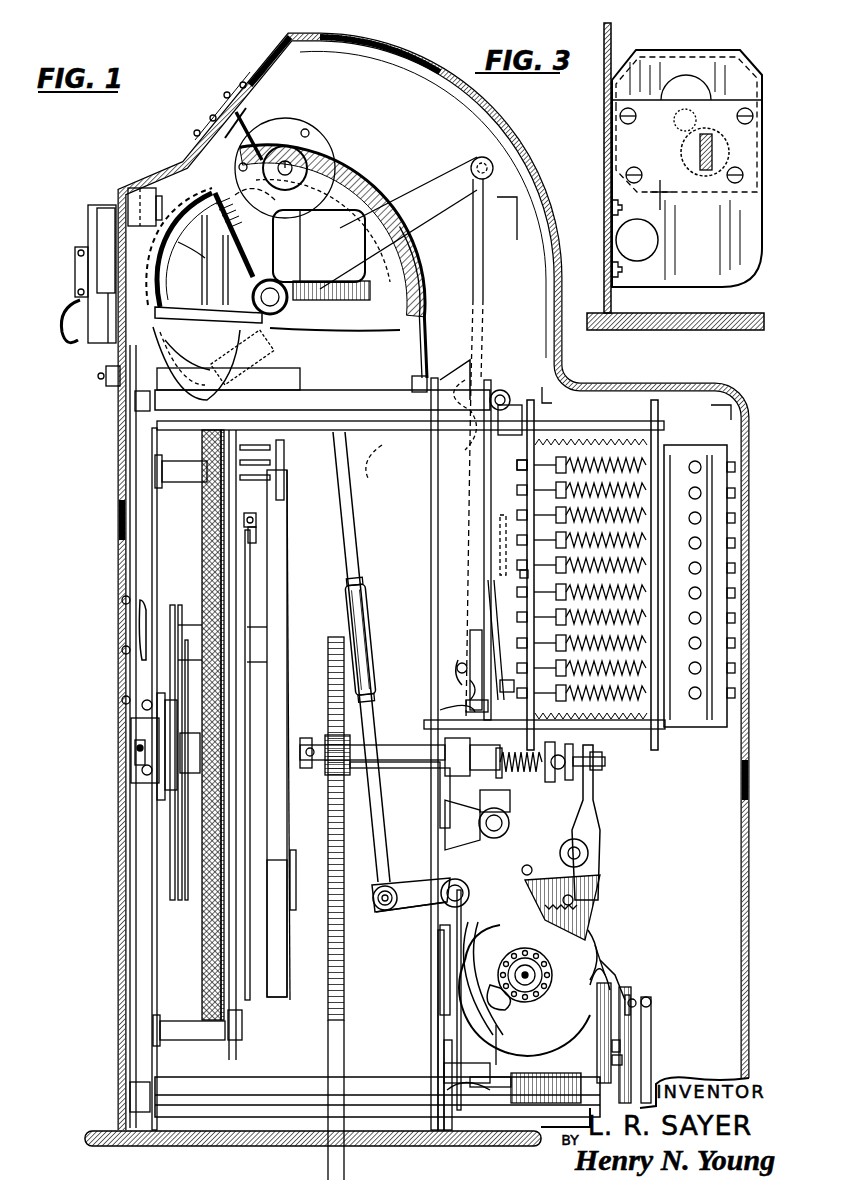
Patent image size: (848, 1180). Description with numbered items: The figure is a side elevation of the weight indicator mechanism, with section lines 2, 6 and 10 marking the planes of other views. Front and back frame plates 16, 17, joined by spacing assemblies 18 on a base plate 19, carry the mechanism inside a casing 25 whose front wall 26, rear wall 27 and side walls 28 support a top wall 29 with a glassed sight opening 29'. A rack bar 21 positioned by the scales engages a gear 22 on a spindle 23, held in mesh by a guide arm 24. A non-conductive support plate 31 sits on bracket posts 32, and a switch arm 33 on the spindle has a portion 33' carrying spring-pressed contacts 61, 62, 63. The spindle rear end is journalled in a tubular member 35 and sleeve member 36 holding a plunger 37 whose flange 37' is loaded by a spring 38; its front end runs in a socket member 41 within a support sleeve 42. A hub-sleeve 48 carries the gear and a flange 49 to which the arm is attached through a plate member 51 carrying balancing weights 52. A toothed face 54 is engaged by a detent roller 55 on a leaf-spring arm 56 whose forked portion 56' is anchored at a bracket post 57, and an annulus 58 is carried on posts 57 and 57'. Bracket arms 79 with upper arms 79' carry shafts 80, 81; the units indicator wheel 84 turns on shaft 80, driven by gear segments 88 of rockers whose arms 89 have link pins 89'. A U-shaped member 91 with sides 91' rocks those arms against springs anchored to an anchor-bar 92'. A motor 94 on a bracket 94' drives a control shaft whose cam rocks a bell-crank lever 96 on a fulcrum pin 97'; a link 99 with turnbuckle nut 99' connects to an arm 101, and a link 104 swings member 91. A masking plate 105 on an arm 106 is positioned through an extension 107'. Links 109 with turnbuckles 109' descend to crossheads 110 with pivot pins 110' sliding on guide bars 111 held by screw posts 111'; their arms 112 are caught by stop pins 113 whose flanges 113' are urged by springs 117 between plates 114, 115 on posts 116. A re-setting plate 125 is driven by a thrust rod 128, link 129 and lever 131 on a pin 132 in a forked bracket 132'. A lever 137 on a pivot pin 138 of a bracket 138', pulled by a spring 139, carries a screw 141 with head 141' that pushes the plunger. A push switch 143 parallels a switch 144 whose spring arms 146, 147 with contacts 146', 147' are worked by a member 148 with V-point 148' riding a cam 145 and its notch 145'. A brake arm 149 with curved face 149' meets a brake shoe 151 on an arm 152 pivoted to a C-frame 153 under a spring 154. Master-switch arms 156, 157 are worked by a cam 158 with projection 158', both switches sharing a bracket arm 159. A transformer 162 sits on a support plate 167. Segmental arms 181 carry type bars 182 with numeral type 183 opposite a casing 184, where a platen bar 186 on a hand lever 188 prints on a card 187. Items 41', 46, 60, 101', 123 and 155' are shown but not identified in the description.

In FIG. 1, the section line 2 is at (285, 108).
In FIG. 1, the section line 6 is at (288, 46).
In FIG. 1, the register machine 10 is at (75, 200).
In FIG. 1, the front frame plate 16 is at (156, 520).
In FIG. 1, the rear frame plate 17 is at (432, 578).
In FIG. 3, the rear frame plate 17 is at (605, 190).
In FIG. 1, the spacing assemblies 18 is at (273, 1080).
In FIG. 1, the base plate 19 is at (205, 1140).
In FIG. 3, the base plate 19 is at (684, 322).
In FIG. 1, the rack bar 21 is at (345, 1035).
In FIG. 1, the gear 22 is at (345, 790).
In FIG. 1, the spindle 23 is at (390, 762).
In FIG. 1, the guide arm 24 is at (398, 745).
In FIG. 1, the casing 25 is at (163, 148).
In FIG. 1, the front wall 26 is at (118, 523).
In FIG. 1, the rear wall 27 is at (742, 777).
In FIG. 1, the side walls 28 is at (394, 155).
In FIG. 1, the top wall 29 is at (380, 54).
In FIG. 1, the sight opening 29' is at (206, 106).
In FIG. 1, the support plate 31 is at (238, 1016).
In FIG. 1, the bracket posts 32 is at (186, 458).
In FIG. 1, the switch arm 33 is at (284, 735).
In FIG. 1, the arm portion 33' is at (301, 473).
In FIG. 1, the tubular member 35 is at (417, 798).
In FIG. 1, the sleeve member 36 is at (478, 750).
In FIG. 1, the plunger 37 is at (519, 772).
In FIG. 1, the flange 37' is at (560, 776).
In FIG. 1, the helical compression spring 38 is at (540, 755).
In FIG. 1, the socket member 41 is at (110, 756).
In FIG. 1, the contact point 41' is at (106, 745).
In FIG. 1, the support sleeve 42 is at (137, 762).
In FIG. 1, the bracket 46 is at (135, 725).
In FIG. 1, the hub-sleeve 48 is at (312, 766).
In FIG. 1, the annular flange 49 is at (303, 736).
In FIG. 1, the plate member 51 is at (295, 850).
In FIG. 1, the balancing weight elements 52 is at (326, 776).
In FIG. 1, the toothed annular rear face 54 is at (238, 990).
In FIG. 1, the detent roller 55 is at (248, 512).
In FIG. 1, the leaf-spring arm 56 is at (286, 765).
In FIG. 1, the forked terminal portion 56' is at (287, 532).
In FIG. 1, the bracket post 57 is at (182, 739).
In FIG. 1, the bracket post 57' is at (180, 787).
In FIG. 1, the annulus 58 is at (199, 745).
In FIG. 1, the plate 60 is at (143, 600).
In FIG. 1, the electrical contact 61 is at (284, 480).
In FIG. 1, the electrical contact 62 is at (284, 466).
In FIG. 1, the electrical contact 63 is at (284, 450).
In FIG. 1, the bracket arms 79 is at (348, 261).
In FIG. 1, the upper arms 79' is at (330, 224).
In FIG. 1, the support shaft 80 is at (300, 160).
In FIG. 1, the support shaft 81 is at (277, 282).
In FIG. 1, the indicator wheel 84 is at (285, 168).
In FIG. 1, the gear segments 88 is at (240, 174).
In FIG. 1, the arms 89 is at (437, 368).
In FIG. 1, the link pins 89' is at (511, 383).
In FIG. 1, the U-shaped member 91 is at (427, 310).
In FIG. 1, the sides 91' is at (430, 378).
In FIG. 1, the anchor-bar 92' is at (205, 358).
In FIG. 3, the electric motor 94 is at (687, 158).
In FIG. 3, the bracket 94' is at (659, 240).
In FIG. 1, the bell-crank lever 96 is at (411, 879).
In FIG. 1, the fulcrum pin 97' is at (402, 913).
In FIG. 1, the link member 99 is at (366, 657).
In FIG. 1, the turnbuckle nut 99' is at (376, 639).
In FIG. 1, the arm 101 is at (366, 467).
In FIG. 1, the lever end 101' is at (454, 690).
In FIG. 1, the link 104 is at (295, 382).
In FIG. 1, the masking plate 105 is at (248, 120).
In FIG. 1, the arm 106 is at (242, 154).
In FIG. 1, the extension 107' is at (418, 268).
In FIG. 1, the links 109 is at (462, 646).
In FIG. 1, the turnbuckle 109' is at (467, 580).
In FIG. 1, the crosshead 110 is at (452, 655).
In FIG. 1, the pivot pin 110' is at (455, 695).
In FIG. 1, the guide bar 111 is at (469, 550).
In FIG. 1, the screw posts 111' is at (456, 518).
In FIG. 1, the arm 112 is at (512, 670).
In FIG. 1, the stop pin members 113 is at (548, 573).
In FIG. 1, the flanges 113' is at (559, 433).
In FIG. 1, the plate member 114 is at (516, 411).
In FIG. 1, the plate member 115 is at (656, 412).
In FIG. 1, the bracket posts 116 is at (605, 432).
In FIG. 1, the helical compression springs 117 is at (628, 440).
In FIG. 1, the key board 123 is at (685, 703).
In FIG. 1, the re-setting plate 125 is at (530, 528).
In FIG. 1, the thrust rod 128 is at (525, 572).
In FIG. 1, the link 129 is at (506, 640).
In FIG. 1, the lever 131 is at (482, 804).
In FIG. 1, the pin 132 is at (512, 822).
In FIG. 1, the forked bracket 132' is at (431, 825).
In FIG. 1, the lever 137 is at (597, 828).
In FIG. 1, the pivot pin 138 is at (597, 853).
In FIG. 1, the bracket 138' is at (530, 857).
In FIG. 1, the tension spring 139 is at (582, 886).
In FIG. 1, the adjustable member 141 is at (614, 767).
In FIG. 1, the screw head 141' is at (586, 756).
In FIG. 1, the push switch 143 is at (108, 386).
In FIG. 1, the switch 144 is at (635, 1000).
In FIG. 1, the plate cam 145 is at (524, 991).
In FIG. 1, the notch 145' is at (611, 945).
In FIG. 1, the spring arm 146 is at (657, 1045).
In FIG. 1, the terminal contact 146' is at (667, 1010).
In FIG. 1, the spring arm 147 is at (661, 1033).
In FIG. 1, the terminal contact 147' is at (679, 1044).
In FIG. 1, the cam-contacting member 148 is at (640, 963).
In FIG. 1, the V-point 148' is at (676, 970).
In FIG. 1, the radial arm 149 is at (529, 1009).
In FIG. 1, the curved end face 149' is at (517, 1045).
In FIG. 1, the brake shoe 151 is at (482, 956).
In FIG. 1, the arm 152 is at (500, 1058).
In FIG. 1, the C-frame 153 is at (433, 1010).
In FIG. 1, the helical compression spring 154 is at (437, 958).
In FIG. 1, the pin 155' is at (651, 970).
In FIG. 1, the spring arm 156 is at (620, 1045).
In FIG. 1, the spring arm 157 is at (625, 1060).
In FIG. 1, the plate cam 158 is at (605, 906).
In FIG. 1, the projection 158' is at (600, 895).
In FIG. 1, the bracket arm 159 is at (522, 1099).
In FIG. 1, the transformer 162 is at (278, 249).
In FIG. 1, the support plate 167 is at (172, 355).
In FIG. 1, the arms 181 is at (195, 246).
In FIG. 1, the type bars 182 is at (218, 194).
In FIG. 1, the numeral type 183 is at (182, 214).
In FIG. 1, the casing 184 is at (100, 225).
In FIG. 1, the platen bar 186 is at (112, 250).
In FIG. 1, the card 187 is at (140, 170).
In FIG. 1, the lever 188 is at (70, 300).